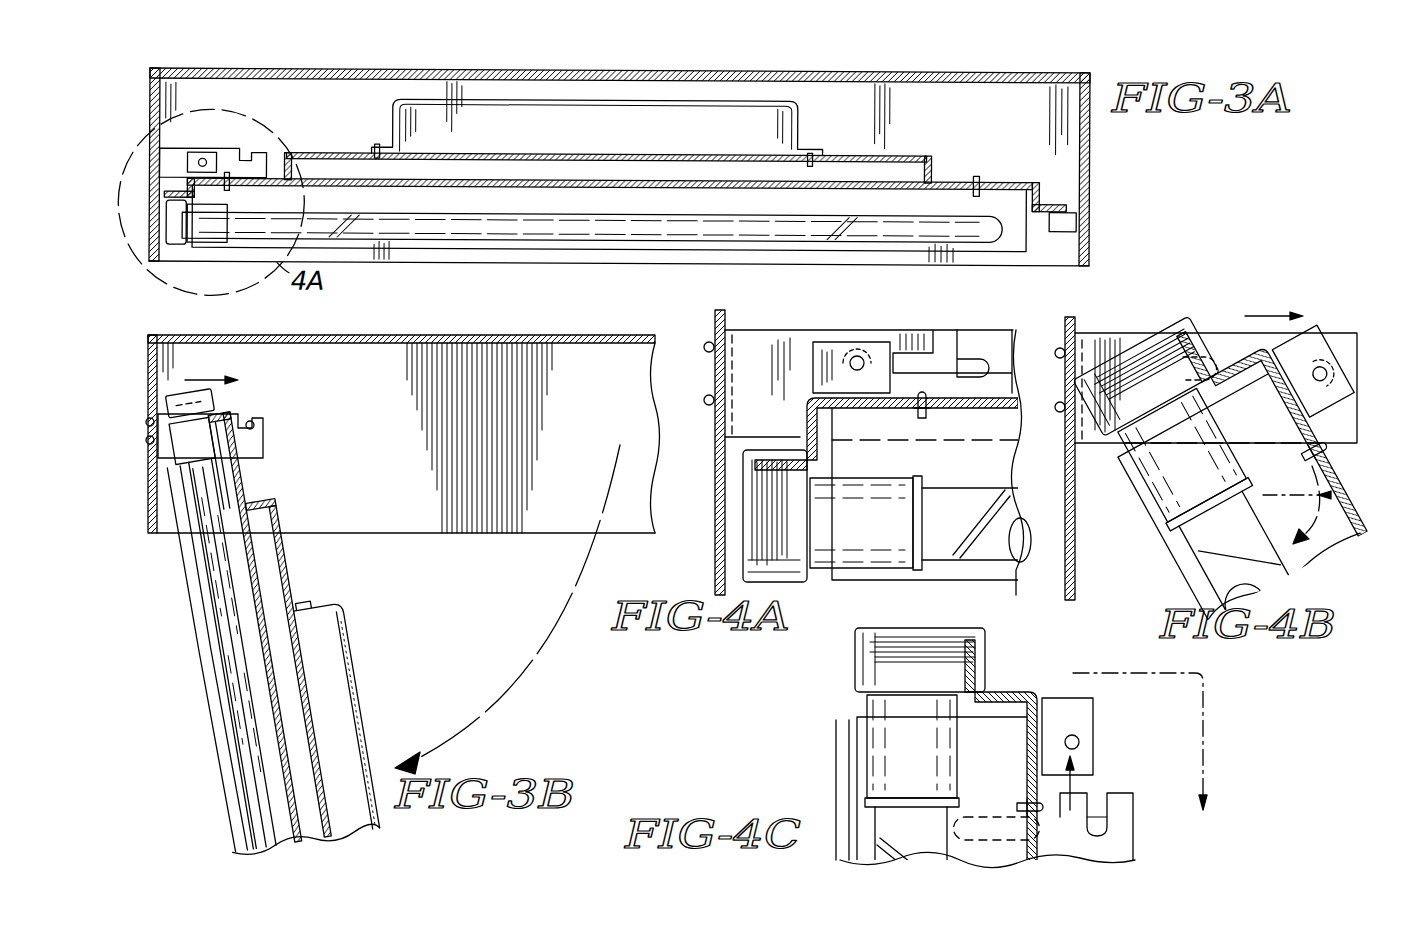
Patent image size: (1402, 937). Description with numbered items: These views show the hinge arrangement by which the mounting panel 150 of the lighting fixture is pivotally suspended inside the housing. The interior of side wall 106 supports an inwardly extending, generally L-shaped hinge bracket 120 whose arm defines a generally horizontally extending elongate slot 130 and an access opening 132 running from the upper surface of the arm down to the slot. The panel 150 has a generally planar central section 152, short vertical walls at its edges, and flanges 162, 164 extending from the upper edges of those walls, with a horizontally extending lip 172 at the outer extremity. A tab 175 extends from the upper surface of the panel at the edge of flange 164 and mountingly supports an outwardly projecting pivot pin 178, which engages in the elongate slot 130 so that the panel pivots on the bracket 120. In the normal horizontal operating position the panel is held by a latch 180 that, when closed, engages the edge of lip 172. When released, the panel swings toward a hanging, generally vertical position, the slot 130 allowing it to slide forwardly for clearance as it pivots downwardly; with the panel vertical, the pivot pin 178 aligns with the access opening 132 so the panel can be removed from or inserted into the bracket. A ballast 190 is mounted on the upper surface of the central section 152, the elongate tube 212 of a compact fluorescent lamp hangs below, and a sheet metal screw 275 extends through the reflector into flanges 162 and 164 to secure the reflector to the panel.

In FIG. 4C, the side wall 106 is at (836, 738).
In FIG. 3A, the hinge bracket 120 is at (252, 148).
In FIG. 3B, the hinge bracket 120 is at (262, 440).
In FIG. 4A, the hinge bracket 120 is at (759, 343).
In FIG. 4B, the hinge bracket 120 is at (1129, 338).
In FIG. 4C, the hinge bracket 120 is at (1112, 848).
In FIG. 4A, the elongate slot 130 is at (955, 352).
In FIG. 4C, the elongate slot 130 is at (1094, 836).
In FIG. 4C, the access opening 132 is at (1082, 800).
In FIG. 3A, the mounting panel 150 is at (910, 152).
In FIG. 4A, the mounting panel 150 is at (1032, 398).
In FIG. 4B, the mounting panel 150 is at (1275, 433).
In FIG. 4C, the mounting panel 150 is at (1050, 716).
In FIG. 3A, the central section 152 is at (840, 70).
In FIG. 3A, the flange 162 is at (962, 174).
In FIG. 3A, the flange 164 is at (290, 166).
In FIG. 3A, the lip 172 is at (1064, 200).
In FIG. 4C, the tab 175 is at (1094, 716).
In FIG. 4C, the pivot pin 178 is at (1084, 744).
In FIG. 3A, the latch 180 is at (1080, 215).
In FIG. 3A, the ballast 190 is at (684, 141).
In FIG. 3B, the ballast 190 is at (337, 693).
In FIG. 3A, the elongate tube 212 is at (878, 235).
In FIG. 3A, the sheet metal screw 275 is at (984, 180).